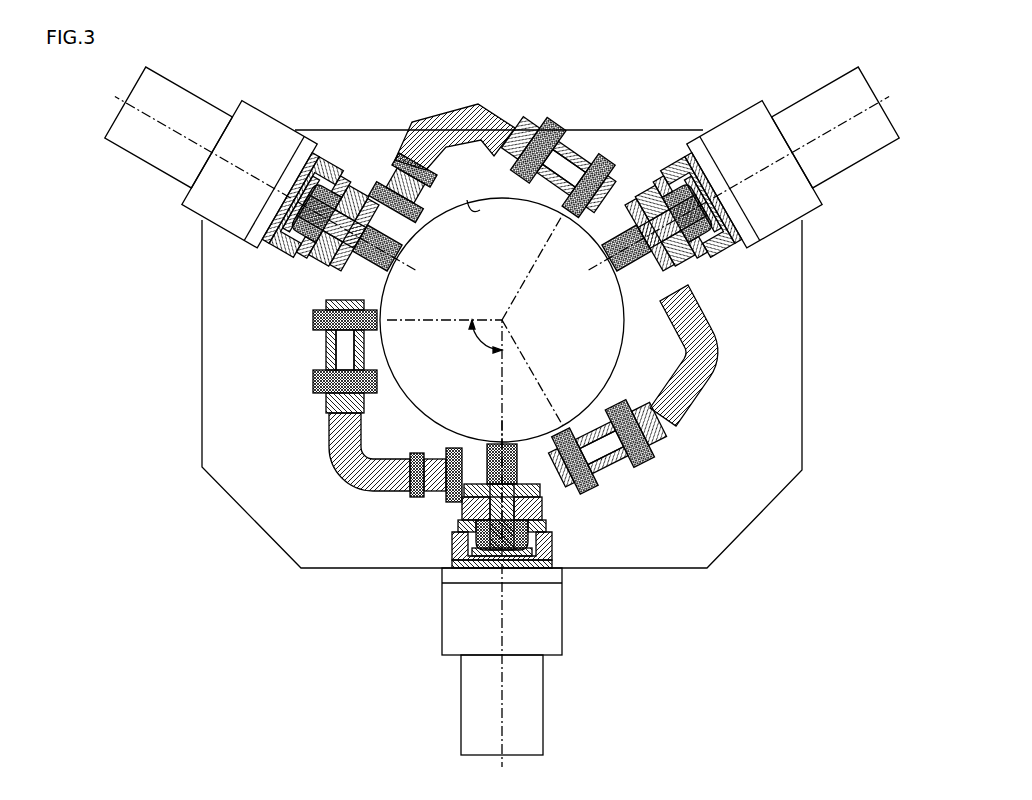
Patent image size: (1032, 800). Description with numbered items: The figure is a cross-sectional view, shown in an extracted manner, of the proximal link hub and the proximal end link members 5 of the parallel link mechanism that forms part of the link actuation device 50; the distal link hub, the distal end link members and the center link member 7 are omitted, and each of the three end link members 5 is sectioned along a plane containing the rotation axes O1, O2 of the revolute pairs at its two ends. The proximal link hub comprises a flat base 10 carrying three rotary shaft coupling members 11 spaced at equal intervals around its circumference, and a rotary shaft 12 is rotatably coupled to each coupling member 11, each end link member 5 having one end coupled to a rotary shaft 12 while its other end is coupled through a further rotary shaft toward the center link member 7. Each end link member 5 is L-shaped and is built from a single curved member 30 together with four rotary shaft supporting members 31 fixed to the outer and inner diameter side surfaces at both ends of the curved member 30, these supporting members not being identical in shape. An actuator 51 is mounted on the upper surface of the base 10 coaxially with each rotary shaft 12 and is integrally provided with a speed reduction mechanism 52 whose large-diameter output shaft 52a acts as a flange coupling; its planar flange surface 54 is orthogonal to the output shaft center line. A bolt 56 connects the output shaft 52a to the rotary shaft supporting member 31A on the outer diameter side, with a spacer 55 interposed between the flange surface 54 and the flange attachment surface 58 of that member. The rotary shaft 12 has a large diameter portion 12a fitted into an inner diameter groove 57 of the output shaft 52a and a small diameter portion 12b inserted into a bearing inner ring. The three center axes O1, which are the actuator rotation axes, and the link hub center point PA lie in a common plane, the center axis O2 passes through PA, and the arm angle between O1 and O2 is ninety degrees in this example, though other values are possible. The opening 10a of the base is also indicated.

The proximal end link member 5 is at (504, 324).
The center link member 7 is at (552, 232).
The base 10 is at (227, 452).
The opening of housing 10a is at (467, 200).
The rotary shaft coupling member 11 is at (385, 282).
The rotary shaft 12 is at (444, 331).
The large diameter portion 12a is at (560, 562).
The small diameter portion 12b is at (560, 540).
The curved member 30 is at (420, 126).
The rotary shaft supporting member 31 is at (548, 208).
The rotary shaft supporting member on the outer diameter side 31A is at (342, 268).
The link actuation device 50 is at (182, 397).
The actuator 51 is at (200, 97).
The speed reduction mechanism 52 is at (275, 105).
The output shaft 52a is at (205, 233).
The flange surface 54 is at (465, 528).
The spacer 55 is at (470, 520).
The bolt 56 is at (497, 440).
The inner diameter groove 57 is at (478, 535).
The flange attachment surface 58 is at (462, 517).
The link hub center point PA is at (507, 320).
The center axis of the revolute pair of the proximal link hub and proximal end link O1 is at (498, 352).
The center axis of the revolute pair of the end link member and center link member O2 is at (441, 322).